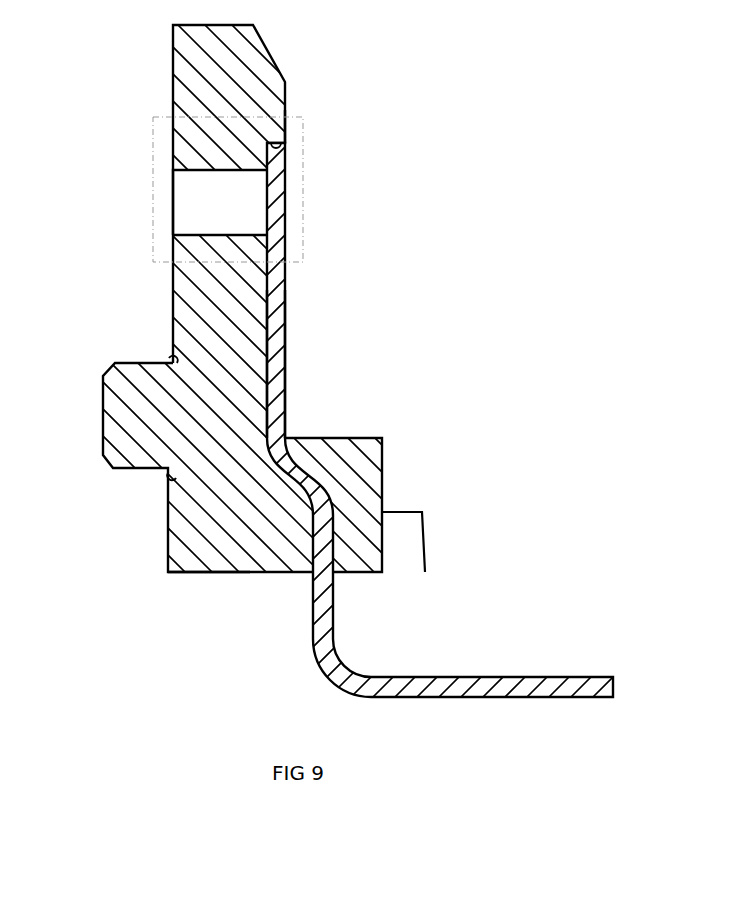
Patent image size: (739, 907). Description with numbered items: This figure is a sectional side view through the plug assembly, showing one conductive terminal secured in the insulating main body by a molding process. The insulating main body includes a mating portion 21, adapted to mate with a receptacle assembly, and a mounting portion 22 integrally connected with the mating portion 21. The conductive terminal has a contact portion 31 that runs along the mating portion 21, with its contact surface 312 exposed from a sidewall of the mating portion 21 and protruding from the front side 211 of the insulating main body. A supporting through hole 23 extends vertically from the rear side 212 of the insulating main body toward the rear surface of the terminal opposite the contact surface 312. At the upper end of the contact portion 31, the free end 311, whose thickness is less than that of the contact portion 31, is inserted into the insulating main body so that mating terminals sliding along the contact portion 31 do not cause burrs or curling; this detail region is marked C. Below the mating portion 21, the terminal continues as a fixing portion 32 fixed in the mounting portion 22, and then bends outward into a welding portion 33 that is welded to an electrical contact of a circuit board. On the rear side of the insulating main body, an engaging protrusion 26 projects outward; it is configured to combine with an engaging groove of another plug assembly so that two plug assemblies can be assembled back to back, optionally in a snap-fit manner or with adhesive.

The mating portion 21 is at (190, 278).
The mounting portion 22 is at (180, 530).
The supporting through hole 23 is at (187, 225).
The engaging protrusion 26 is at (145, 418).
The front side 211 is at (288, 132).
The rear side 212 is at (185, 168).
The contact portion 31 is at (288, 272).
The free end 311 is at (288, 145).
The contact surface 312 is at (290, 307).
The fixing portion 32 is at (317, 507).
The welding portion 33 is at (582, 697).
The region C is at (305, 187).